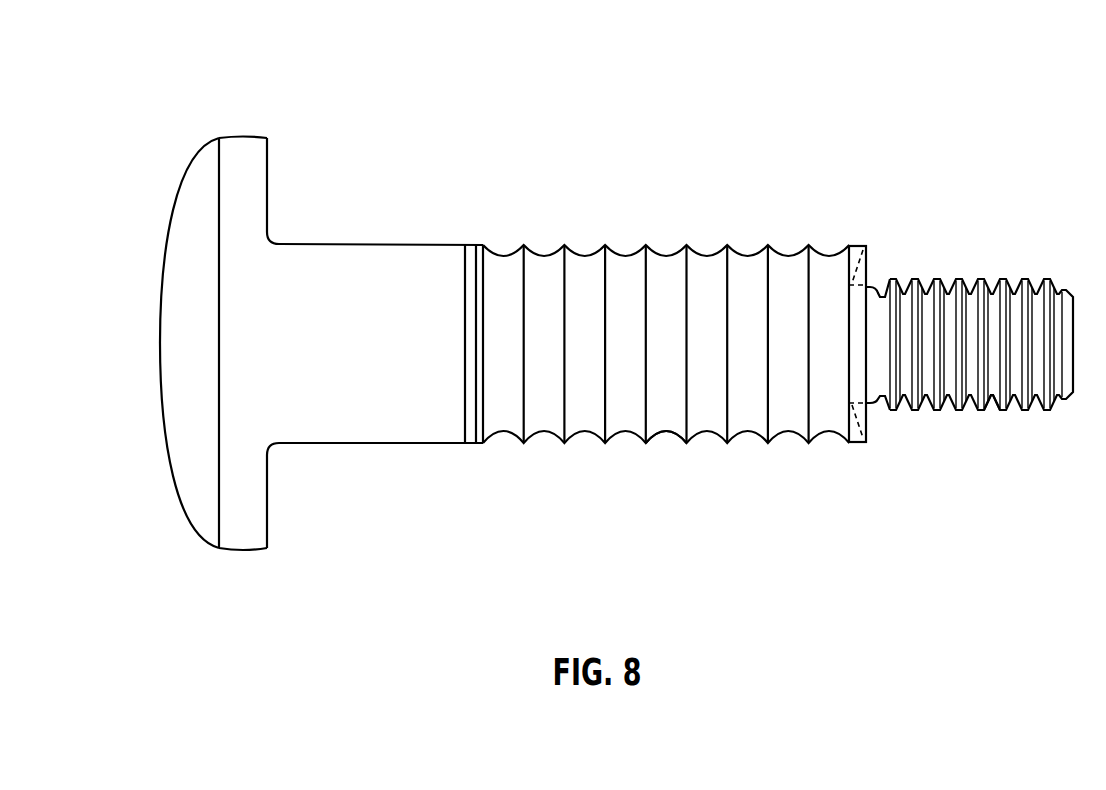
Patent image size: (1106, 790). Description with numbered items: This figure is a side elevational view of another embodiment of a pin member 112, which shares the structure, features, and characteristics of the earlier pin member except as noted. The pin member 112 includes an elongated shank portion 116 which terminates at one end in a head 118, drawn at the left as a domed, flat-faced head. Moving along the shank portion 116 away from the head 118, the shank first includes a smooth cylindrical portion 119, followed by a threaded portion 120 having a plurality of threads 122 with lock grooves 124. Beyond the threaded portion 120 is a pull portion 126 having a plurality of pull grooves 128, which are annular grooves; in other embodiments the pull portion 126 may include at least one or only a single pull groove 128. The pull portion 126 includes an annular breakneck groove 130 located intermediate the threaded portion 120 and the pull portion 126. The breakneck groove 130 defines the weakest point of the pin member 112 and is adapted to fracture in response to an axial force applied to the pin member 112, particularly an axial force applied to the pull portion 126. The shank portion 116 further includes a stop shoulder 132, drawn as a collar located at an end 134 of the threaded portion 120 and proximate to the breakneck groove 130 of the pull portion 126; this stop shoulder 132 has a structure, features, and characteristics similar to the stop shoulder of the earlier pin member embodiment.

The pin member 112 is at (321, 110).
The shank portion 116 is at (472, 430).
The head 118 is at (188, 213).
The smooth cylindrical portion 119 is at (343, 425).
The threaded portion 120 is at (652, 249).
The threads 122 is at (565, 441).
The lock grooves 124 is at (677, 412).
The pull portion 126 is at (988, 403).
The pull grooves 128 is at (1008, 278).
The breakneck groove 130 is at (882, 372).
The stop shoulder 132 is at (857, 246).
The end of the threaded portion 134 is at (852, 444).